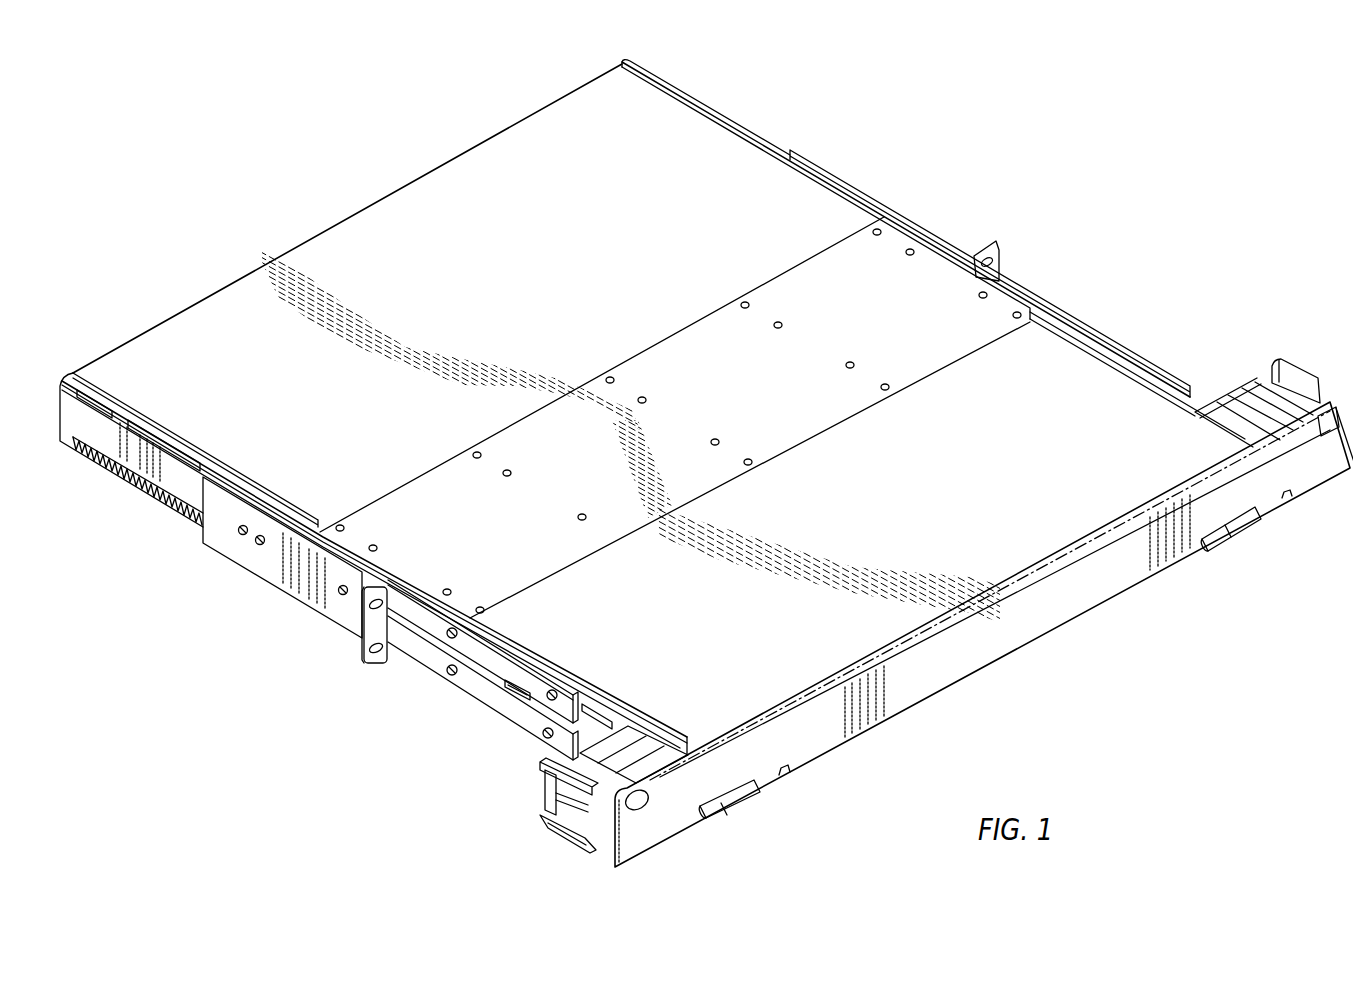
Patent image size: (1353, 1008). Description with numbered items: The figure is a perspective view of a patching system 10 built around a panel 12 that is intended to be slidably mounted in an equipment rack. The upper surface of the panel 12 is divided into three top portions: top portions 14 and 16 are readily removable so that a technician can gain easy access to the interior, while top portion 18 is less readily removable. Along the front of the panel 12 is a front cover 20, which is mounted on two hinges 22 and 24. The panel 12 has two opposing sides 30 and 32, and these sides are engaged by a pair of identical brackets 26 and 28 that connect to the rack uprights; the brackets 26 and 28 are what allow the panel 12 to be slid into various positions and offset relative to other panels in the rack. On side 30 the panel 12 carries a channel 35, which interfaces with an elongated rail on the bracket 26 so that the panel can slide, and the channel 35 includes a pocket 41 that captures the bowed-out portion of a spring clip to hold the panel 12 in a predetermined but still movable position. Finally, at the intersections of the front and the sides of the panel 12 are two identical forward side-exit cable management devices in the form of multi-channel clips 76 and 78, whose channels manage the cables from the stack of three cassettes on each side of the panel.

The patching system 10 is at (1148, 157).
The panel 12 is at (373, 250).
The top portion 14 is at (700, 163).
The top portion 16 is at (550, 620).
The top portion 18 is at (880, 260).
The front cover 20 is at (820, 738).
The hinge 22 is at (733, 803).
The hinge 24 is at (1218, 547).
The bracket 26 is at (270, 557).
The bracket 28 is at (943, 243).
The side 30 is at (417, 623).
The side 32 is at (1040, 305).
The channel 35 is at (438, 642).
The pocket 41 is at (517, 700).
The multi-channel clip 76 is at (545, 770).
The multi-channel clip 78 is at (1267, 380).